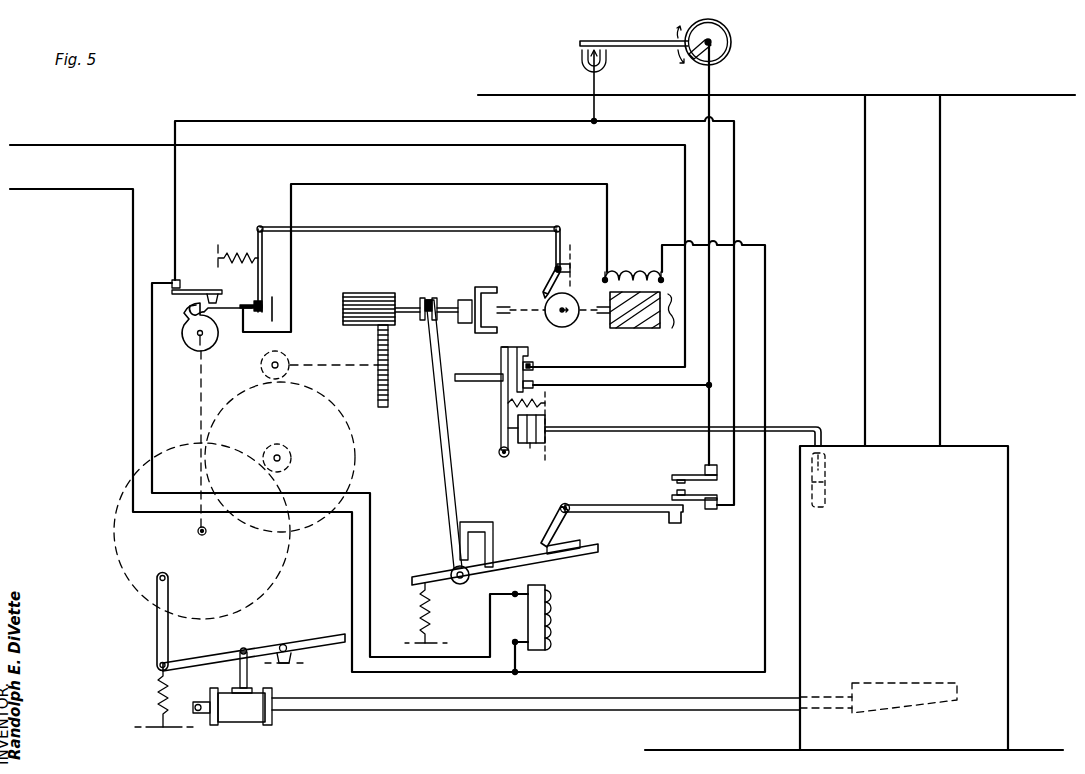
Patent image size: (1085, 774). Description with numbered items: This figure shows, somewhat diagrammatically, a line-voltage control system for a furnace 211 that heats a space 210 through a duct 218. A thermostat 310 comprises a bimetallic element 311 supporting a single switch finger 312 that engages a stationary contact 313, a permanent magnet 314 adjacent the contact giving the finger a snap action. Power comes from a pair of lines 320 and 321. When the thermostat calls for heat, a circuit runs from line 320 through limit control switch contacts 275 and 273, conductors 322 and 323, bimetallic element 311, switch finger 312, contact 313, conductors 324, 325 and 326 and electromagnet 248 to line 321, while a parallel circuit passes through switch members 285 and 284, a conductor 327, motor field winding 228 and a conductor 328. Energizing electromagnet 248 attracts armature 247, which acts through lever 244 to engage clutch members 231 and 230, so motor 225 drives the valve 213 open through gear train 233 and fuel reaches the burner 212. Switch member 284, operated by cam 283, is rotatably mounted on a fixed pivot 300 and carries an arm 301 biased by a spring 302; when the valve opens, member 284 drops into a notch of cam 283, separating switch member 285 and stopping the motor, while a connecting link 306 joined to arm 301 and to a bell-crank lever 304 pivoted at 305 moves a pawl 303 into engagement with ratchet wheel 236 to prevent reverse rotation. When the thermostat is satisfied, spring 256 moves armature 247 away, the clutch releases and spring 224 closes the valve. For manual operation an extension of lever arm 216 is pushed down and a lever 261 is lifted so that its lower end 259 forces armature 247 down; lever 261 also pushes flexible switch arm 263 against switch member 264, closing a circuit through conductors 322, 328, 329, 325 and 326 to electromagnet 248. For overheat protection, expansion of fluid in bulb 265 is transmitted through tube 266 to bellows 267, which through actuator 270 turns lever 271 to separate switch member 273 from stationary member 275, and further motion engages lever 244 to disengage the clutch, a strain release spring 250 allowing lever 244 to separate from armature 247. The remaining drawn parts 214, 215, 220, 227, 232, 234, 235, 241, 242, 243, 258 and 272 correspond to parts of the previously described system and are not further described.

The space 210 is at (1000, 35).
The furnace 211 is at (1006, 520).
The burner 212 is at (897, 682).
The valve 213 is at (236, 723).
The valve stem 214 is at (238, 674).
The valve stem pin 215 is at (244, 650).
The lever arm 216 is at (210, 658).
The duct 218 is at (940, 266).
The lever pivot 220 is at (285, 644).
The biasing spring 224 is at (155, 693).
The motor 225 is at (655, 327).
The motor 227 is at (616, 330).
The motor field winding 228 is at (626, 272).
The clutch member 230 is at (480, 288).
The clutch member 231 is at (461, 324).
The solenoid 232 is at (372, 293).
The gear train 233 is at (372, 470).
The connecting rod 234 is at (155, 638).
The drive wheel 235 is at (115, 540).
The ratchet wheel 236 is at (560, 328).
The shaft 241 is at (404, 305).
The rack 242 is at (422, 326).
The clutch plates 243 is at (430, 290).
The lever 244 is at (450, 495).
The armature 247 is at (572, 567).
The electromagnet 248 is at (548, 616).
The strain release spring 250 is at (450, 568).
The spring 256 is at (429, 612).
The pivot pin 258 is at (562, 504).
The lower end of lever 259 is at (543, 533).
The lever 261 is at (590, 497).
The flexible switch arm 263 is at (672, 496).
The switch member 264 is at (674, 474).
The bulb 265 is at (828, 482).
The tube 266 is at (622, 433).
The bellows 267 is at (534, 447).
The actuator 270 is at (508, 458).
The lever 271 is at (498, 396).
The spring 272 is at (540, 396).
The switch member 273 is at (535, 384).
The stationary switch member 275 is at (534, 368).
The cam 283 is at (212, 352).
The switch member 284 is at (232, 320).
The switch member 285 is at (187, 297).
The fixed pivot 300 is at (255, 302).
The arm 301 is at (263, 286).
The spring 302 is at (232, 247).
The pawl 303 is at (542, 290).
The bell-crank lever 304 is at (560, 245).
The pivot 305 is at (572, 270).
The connecting link 306 is at (426, 228).
The thermostat 310 is at (783, 33).
The bimetallic element 311 is at (731, 34).
The switch finger 312 is at (646, 48).
The stationary contact 313 is at (580, 62).
The permanent magnet 314 is at (598, 67).
The power supply line 320 is at (42, 152).
The power supply line 321 is at (38, 195).
The conductor 322 is at (662, 386).
The conductor 323 is at (711, 82).
The conductor 324 is at (597, 106).
The conductor 325 is at (440, 118).
The conductor 326 is at (145, 428).
The conductor 327 is at (390, 184).
The conductor 328 is at (706, 412).
The conductor 329 is at (729, 507).